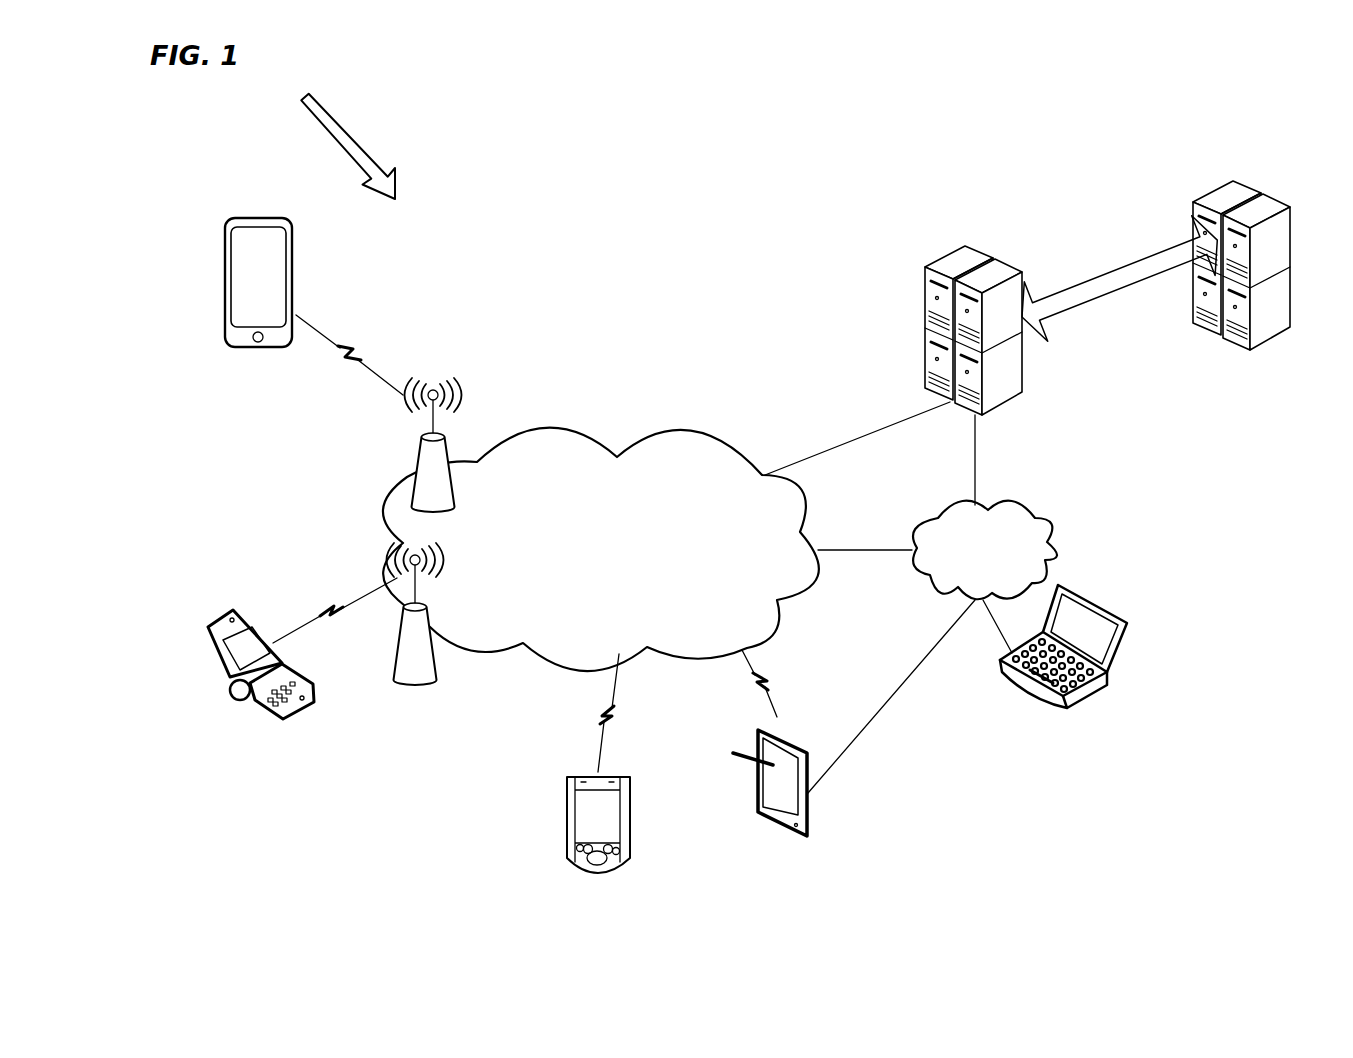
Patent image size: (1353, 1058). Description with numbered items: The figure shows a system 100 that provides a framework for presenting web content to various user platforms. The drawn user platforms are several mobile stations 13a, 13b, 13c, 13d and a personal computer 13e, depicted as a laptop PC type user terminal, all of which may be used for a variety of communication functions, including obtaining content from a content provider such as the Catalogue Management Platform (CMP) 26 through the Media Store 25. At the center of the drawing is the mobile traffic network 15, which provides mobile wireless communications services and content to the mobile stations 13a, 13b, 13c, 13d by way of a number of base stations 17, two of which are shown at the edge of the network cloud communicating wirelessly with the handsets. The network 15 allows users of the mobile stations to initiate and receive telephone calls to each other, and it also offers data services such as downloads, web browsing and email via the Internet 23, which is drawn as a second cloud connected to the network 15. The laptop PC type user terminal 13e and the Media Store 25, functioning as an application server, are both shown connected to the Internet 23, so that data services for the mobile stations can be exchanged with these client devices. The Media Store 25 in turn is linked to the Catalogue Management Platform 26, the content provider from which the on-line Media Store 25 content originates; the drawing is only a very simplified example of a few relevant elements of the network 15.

The system 100 is at (335, 138).
The mobile station 13a is at (211, 643).
The mobile station 13b is at (226, 262).
The mobile station 13c is at (582, 780).
The mobile station 13d is at (757, 803).
The personal computer 13e is at (1024, 694).
The mobile traffic network 15 is at (503, 436).
The base station 17 is at (419, 457).
The Internet 23 is at (938, 590).
The Media Store 25 is at (1023, 368).
The Catalogue Management Platform (CMP) 26 is at (1287, 328).